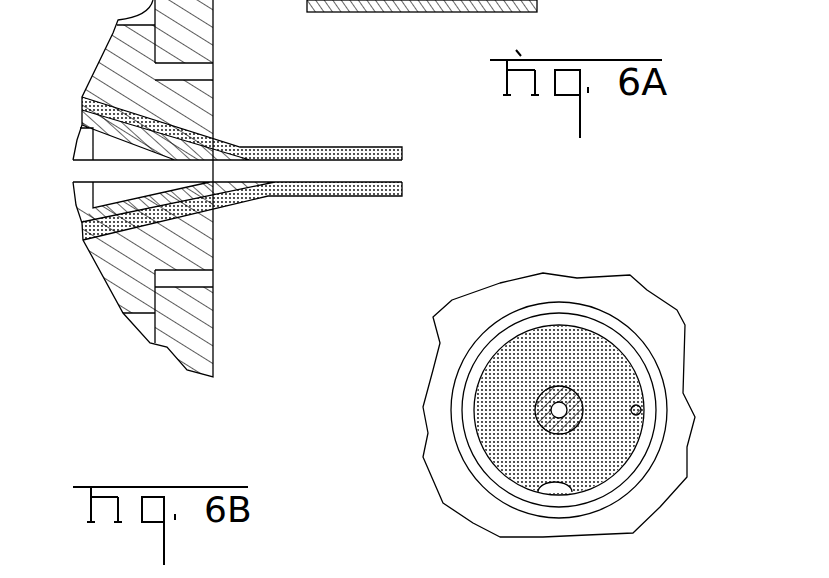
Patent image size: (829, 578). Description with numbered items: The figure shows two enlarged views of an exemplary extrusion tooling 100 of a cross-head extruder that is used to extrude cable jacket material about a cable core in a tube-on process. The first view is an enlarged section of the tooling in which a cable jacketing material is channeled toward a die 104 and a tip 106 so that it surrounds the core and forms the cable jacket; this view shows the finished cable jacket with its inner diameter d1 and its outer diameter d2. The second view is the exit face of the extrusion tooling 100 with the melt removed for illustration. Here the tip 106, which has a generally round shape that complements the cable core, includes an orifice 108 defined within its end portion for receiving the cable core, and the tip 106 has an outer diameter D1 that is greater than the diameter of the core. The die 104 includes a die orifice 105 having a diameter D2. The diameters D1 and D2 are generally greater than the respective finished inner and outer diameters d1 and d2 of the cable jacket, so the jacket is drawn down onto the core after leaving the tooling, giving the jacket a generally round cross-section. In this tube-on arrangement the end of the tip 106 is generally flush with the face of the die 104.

In FIG. 6B, the extrusion tooling 100 is at (420, 324).
In FIG. 6B, the die 104 is at (450, 493).
In FIG. 6B, the die orifice 105 is at (452, 388).
In FIG. 6B, the tip 106 is at (566, 322).
In FIG. 6B, the orifice 108 is at (557, 484).
In FIG. 6A, the inner diameter of cable jacket d1 is at (456, 182).
In FIG. 6A, the outer diameter of cable jacket d2 is at (358, 252).
In FIG. 6B, the outer diameter of tip D1 is at (582, 320).
In FIG. 6B, the die orifice diameter D2 is at (285, 303).